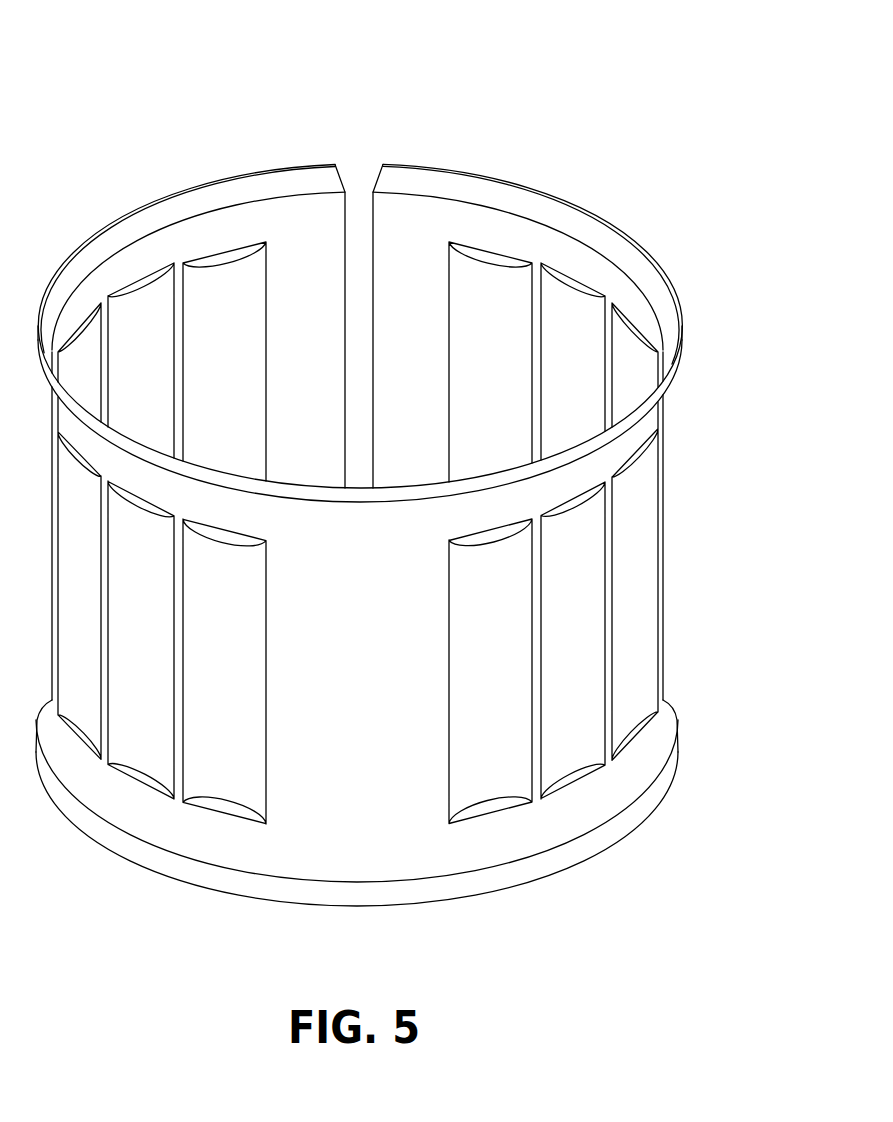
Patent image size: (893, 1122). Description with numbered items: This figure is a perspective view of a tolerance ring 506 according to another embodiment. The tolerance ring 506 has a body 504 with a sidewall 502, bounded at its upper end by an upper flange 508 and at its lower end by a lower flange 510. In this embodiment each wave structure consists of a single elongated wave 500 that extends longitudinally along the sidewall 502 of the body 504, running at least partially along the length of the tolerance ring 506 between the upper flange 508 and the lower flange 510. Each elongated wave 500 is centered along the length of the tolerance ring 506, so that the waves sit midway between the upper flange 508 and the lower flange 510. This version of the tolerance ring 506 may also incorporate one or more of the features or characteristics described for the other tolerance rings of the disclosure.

The elongated wave 500 is at (633, 612).
The sidewall 502 is at (318, 815).
The body 504 is at (655, 441).
The tolerance ring 506 is at (624, 178).
The upper flange 508 is at (247, 188).
The lower flange 510 is at (390, 893).